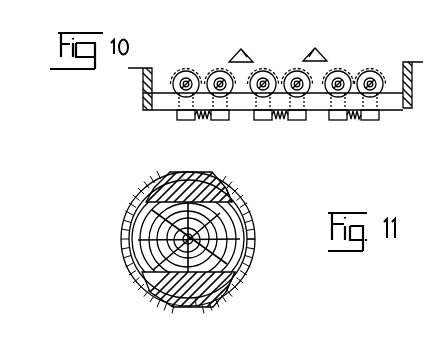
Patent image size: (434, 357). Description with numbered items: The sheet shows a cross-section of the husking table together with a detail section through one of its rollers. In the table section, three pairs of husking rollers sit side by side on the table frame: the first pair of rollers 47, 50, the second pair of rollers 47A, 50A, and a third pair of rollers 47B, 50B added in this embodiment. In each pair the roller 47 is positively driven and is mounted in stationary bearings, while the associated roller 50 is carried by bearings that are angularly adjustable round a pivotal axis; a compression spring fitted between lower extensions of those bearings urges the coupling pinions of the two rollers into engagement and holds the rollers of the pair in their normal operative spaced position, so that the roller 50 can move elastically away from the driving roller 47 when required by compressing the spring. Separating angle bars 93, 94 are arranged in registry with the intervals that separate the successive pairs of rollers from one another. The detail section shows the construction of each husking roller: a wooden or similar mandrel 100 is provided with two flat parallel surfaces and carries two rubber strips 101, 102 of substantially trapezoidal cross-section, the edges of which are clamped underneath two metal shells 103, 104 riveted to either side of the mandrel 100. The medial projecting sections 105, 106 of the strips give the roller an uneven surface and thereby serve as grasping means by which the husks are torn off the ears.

In FIG. 10, the roller 47 is at (379, 70).
In FIG. 10, the roller 47A is at (305, 74).
In FIG. 10, the roller 47B is at (212, 72).
In FIG. 10, the roller 50 is at (331, 72).
In FIG. 10, the roller 50A is at (258, 73).
In FIG. 10, the roller 50B is at (181, 71).
In FIG. 10, the separating angle bar 93 is at (318, 50).
In FIG. 10, the separating angle bar 94 is at (240, 50).
In FIG. 11, the mandrel 100 is at (254, 210).
In FIG. 11, the rubber strip 101 is at (238, 189).
In FIG. 11, the rubber strip 102 is at (235, 288).
In FIG. 11, the metal shell 103 is at (122, 236).
In FIG. 11, the metal shell 104 is at (254, 238).
In FIG. 11, the medial projecting section 105 is at (182, 171).
In FIG. 11, the medial projecting section 106 is at (194, 305).